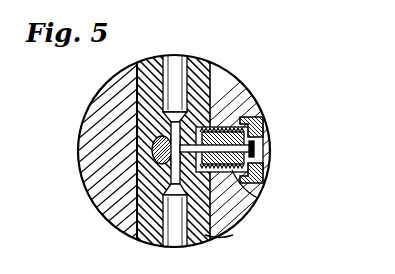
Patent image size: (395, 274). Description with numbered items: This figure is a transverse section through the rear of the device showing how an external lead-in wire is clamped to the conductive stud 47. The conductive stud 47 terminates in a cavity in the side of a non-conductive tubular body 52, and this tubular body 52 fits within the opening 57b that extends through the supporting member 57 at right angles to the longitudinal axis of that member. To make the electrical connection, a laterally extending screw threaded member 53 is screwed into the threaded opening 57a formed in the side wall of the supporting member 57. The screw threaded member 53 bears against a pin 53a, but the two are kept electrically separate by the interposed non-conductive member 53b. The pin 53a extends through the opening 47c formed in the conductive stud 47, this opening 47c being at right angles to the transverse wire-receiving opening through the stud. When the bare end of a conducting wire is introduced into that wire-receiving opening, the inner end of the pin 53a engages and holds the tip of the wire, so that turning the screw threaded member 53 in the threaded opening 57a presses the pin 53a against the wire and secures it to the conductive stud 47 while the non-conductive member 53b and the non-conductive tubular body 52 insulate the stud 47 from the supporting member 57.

The conductive stud 47 is at (152, 149).
The opening 47c is at (237, 216).
The non-conductive tubular body 52 is at (202, 66).
The screw threaded member 53 is at (262, 144).
The pin 53a is at (255, 117).
The non-conductive member 53b is at (262, 199).
The supporting member 57 is at (223, 78).
The threaded opening 57a is at (252, 114).
The opening 57b is at (219, 237).